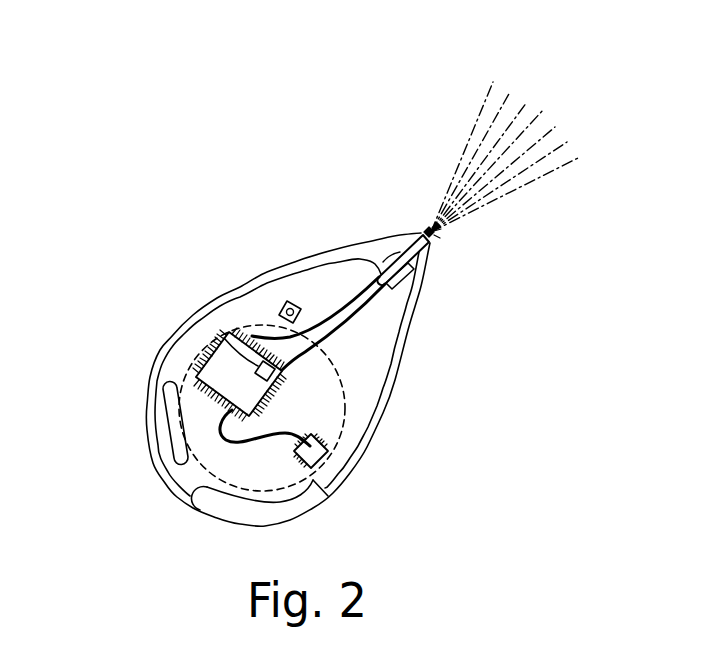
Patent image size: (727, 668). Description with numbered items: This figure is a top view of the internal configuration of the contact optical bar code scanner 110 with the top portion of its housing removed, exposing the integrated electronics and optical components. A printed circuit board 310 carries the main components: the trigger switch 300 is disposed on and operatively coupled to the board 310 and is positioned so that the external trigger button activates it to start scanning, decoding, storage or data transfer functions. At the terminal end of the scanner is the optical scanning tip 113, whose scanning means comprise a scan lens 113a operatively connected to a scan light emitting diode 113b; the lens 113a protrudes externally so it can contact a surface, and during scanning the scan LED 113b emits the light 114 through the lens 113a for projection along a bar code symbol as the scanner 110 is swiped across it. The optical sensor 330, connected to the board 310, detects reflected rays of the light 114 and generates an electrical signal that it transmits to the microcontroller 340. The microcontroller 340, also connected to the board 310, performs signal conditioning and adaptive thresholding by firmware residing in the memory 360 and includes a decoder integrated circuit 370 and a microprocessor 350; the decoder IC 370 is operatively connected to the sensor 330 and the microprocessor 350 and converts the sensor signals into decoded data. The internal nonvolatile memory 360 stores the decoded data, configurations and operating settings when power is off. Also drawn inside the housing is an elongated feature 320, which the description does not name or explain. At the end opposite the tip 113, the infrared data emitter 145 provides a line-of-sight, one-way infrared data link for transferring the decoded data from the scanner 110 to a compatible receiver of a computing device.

The contact optical bar code scanner 110 is at (197, 212).
The optical scanning tip 113 is at (408, 222).
The scan lens 113a is at (433, 240).
The scan light emitting diode 113b is at (381, 262).
The light 114 is at (468, 108).
The infrared data (IrDA) emitter 145 is at (223, 505).
The trigger switch 300 is at (287, 304).
The printed circuit board 310 is at (365, 399).
The vent slot 320 is at (193, 463).
The optical sensor 330 is at (403, 289).
The microcontroller 340 is at (189, 393).
The microprocessor 350 is at (209, 378).
The internal nonvolatile memory 360 is at (311, 451).
The decoder integrated circuit 370 is at (226, 338).